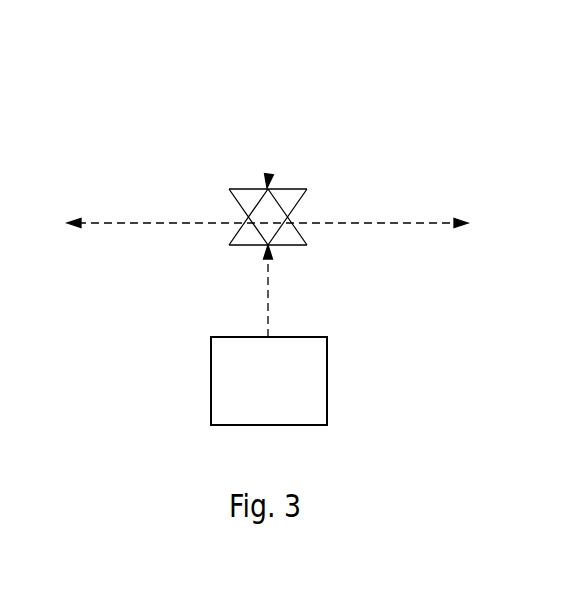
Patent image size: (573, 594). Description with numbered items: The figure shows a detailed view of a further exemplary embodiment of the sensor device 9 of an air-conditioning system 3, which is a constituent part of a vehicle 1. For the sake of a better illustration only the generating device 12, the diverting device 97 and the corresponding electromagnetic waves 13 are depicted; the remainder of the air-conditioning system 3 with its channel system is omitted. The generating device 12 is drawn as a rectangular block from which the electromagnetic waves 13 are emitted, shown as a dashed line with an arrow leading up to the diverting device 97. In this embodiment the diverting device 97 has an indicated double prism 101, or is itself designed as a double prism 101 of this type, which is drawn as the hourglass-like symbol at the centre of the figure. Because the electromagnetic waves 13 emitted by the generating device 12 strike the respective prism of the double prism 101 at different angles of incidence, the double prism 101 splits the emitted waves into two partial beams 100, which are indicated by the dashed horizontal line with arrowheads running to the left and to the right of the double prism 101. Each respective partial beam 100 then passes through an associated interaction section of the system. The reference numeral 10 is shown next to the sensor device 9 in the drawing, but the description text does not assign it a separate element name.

The vehicle 1 is at (424, 125).
The air-conditioning system 3 is at (439, 164).
The sensor device 9 is at (240, 156).
The valve unit 10 is at (222, 152).
The generating device 12 is at (253, 393).
The electromagnetic waves 13 is at (271, 289).
The diverting device 97 is at (300, 142).
The partial beams 100 is at (165, 221).
The double prism 101 is at (268, 172).